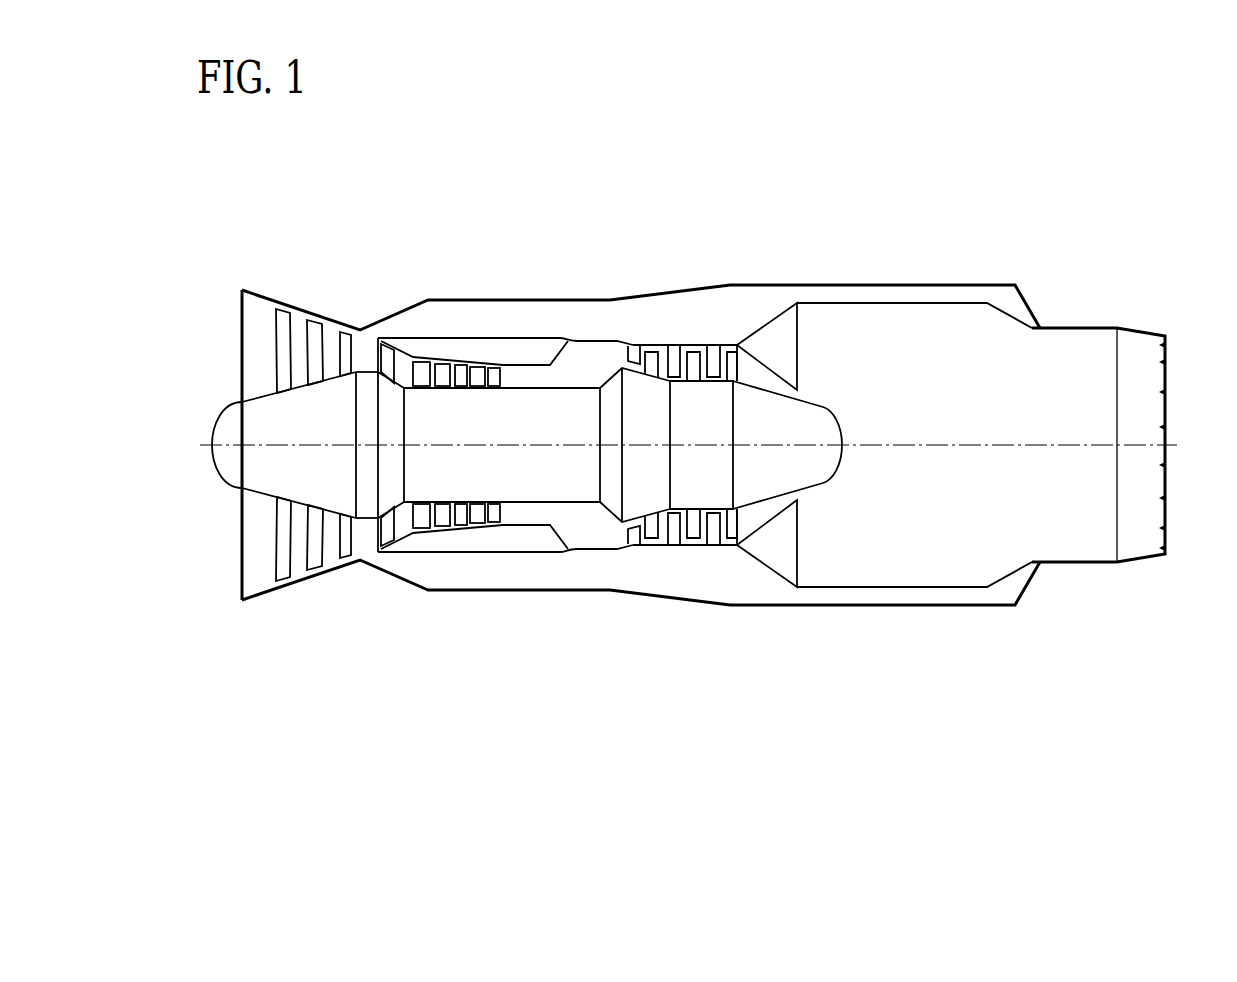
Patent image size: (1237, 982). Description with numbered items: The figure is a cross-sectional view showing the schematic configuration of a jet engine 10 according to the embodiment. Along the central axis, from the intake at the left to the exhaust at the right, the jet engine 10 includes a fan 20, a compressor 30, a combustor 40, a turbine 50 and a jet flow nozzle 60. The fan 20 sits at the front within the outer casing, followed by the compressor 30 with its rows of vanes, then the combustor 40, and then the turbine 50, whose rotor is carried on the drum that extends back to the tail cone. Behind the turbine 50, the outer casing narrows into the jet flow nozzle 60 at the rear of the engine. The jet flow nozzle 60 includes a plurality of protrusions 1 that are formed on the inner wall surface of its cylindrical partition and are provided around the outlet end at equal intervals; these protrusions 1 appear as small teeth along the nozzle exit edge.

The jet engine 10 is at (1011, 222).
The fan 20 is at (314, 599).
The compressor 30 is at (449, 273).
The combustor 40 is at (601, 575).
The turbine 50 is at (683, 315).
The jet flow nozzle 60 is at (1132, 337).
The protrusions 1 is at (1168, 362).